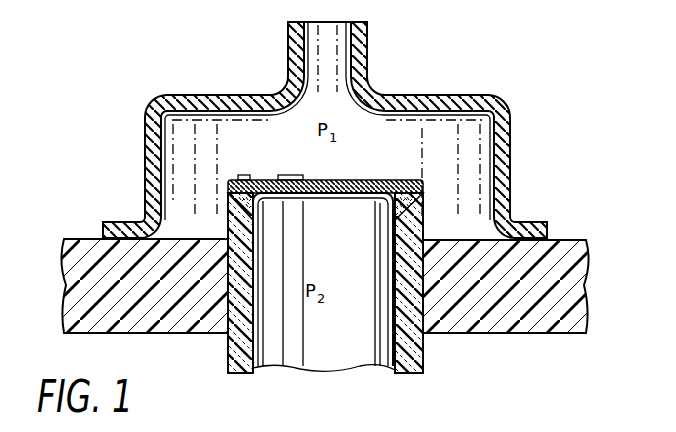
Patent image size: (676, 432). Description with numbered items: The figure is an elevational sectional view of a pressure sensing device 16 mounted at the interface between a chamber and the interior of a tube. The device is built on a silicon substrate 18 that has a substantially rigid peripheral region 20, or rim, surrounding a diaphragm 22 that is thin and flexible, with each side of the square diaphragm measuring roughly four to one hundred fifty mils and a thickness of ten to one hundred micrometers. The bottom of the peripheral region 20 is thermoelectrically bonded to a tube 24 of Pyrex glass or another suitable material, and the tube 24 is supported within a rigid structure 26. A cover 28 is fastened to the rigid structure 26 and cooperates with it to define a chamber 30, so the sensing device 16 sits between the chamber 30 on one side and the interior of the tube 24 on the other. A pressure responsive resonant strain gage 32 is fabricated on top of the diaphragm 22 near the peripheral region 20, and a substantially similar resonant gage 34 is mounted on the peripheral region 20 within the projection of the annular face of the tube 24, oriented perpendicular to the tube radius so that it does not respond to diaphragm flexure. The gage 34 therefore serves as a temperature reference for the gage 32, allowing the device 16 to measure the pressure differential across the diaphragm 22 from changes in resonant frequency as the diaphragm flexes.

The pressure sensing device 16 is at (463, 56).
The silicon substrate 18 is at (388, 196).
The peripheral region 20 is at (418, 183).
The diaphragm 22 is at (342, 180).
The tube 24 is at (424, 348).
The rigid structure 26 is at (566, 299).
The cover 28 is at (215, 93).
The chamber 30 is at (145, 138).
The resonant strain gage 32 is at (290, 173).
The resonant gage 34 is at (248, 174).